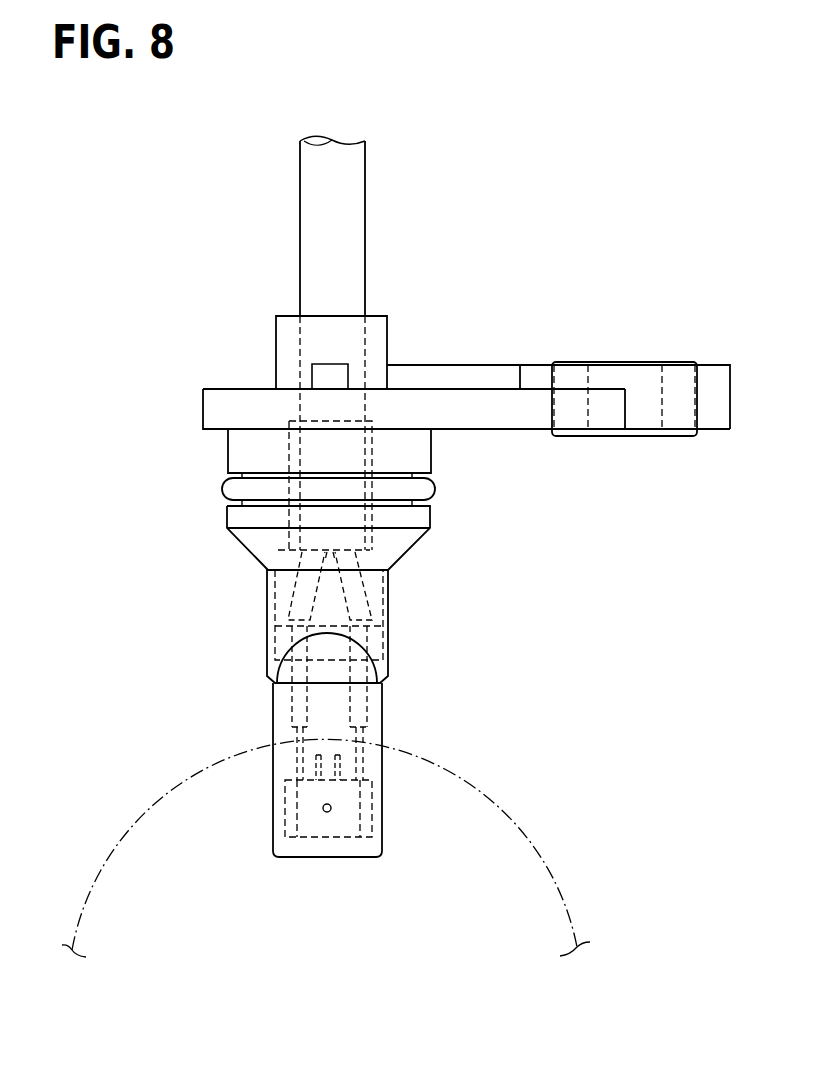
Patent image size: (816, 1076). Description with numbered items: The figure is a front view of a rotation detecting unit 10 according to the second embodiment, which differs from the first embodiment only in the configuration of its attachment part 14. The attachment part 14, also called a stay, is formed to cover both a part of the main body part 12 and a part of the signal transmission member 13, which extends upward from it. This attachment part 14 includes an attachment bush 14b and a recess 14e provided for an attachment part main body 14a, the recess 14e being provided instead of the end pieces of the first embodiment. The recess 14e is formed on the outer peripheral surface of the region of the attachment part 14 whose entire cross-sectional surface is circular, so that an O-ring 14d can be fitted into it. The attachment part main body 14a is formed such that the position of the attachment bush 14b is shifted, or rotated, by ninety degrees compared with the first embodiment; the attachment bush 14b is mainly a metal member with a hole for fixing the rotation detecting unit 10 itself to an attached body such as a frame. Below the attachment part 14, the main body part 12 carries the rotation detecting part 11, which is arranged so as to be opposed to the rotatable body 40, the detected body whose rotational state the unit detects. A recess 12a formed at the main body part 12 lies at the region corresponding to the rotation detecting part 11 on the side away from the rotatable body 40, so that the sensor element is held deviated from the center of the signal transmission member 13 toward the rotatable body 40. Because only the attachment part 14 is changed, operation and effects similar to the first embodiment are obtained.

The rotation detecting unit 10 is at (489, 246).
The rotation detecting part 11 is at (307, 838).
The main body part 12 is at (277, 612).
The recess 12a is at (328, 812).
The signal transmission member 13 is at (323, 237).
The attachment part 14 is at (483, 364).
The attachment part main body 14a is at (523, 413).
The attachment bush 14b is at (695, 400).
The O-ring 14d is at (433, 490).
The recess 14e is at (428, 510).
The rotatable body 40 is at (473, 788).